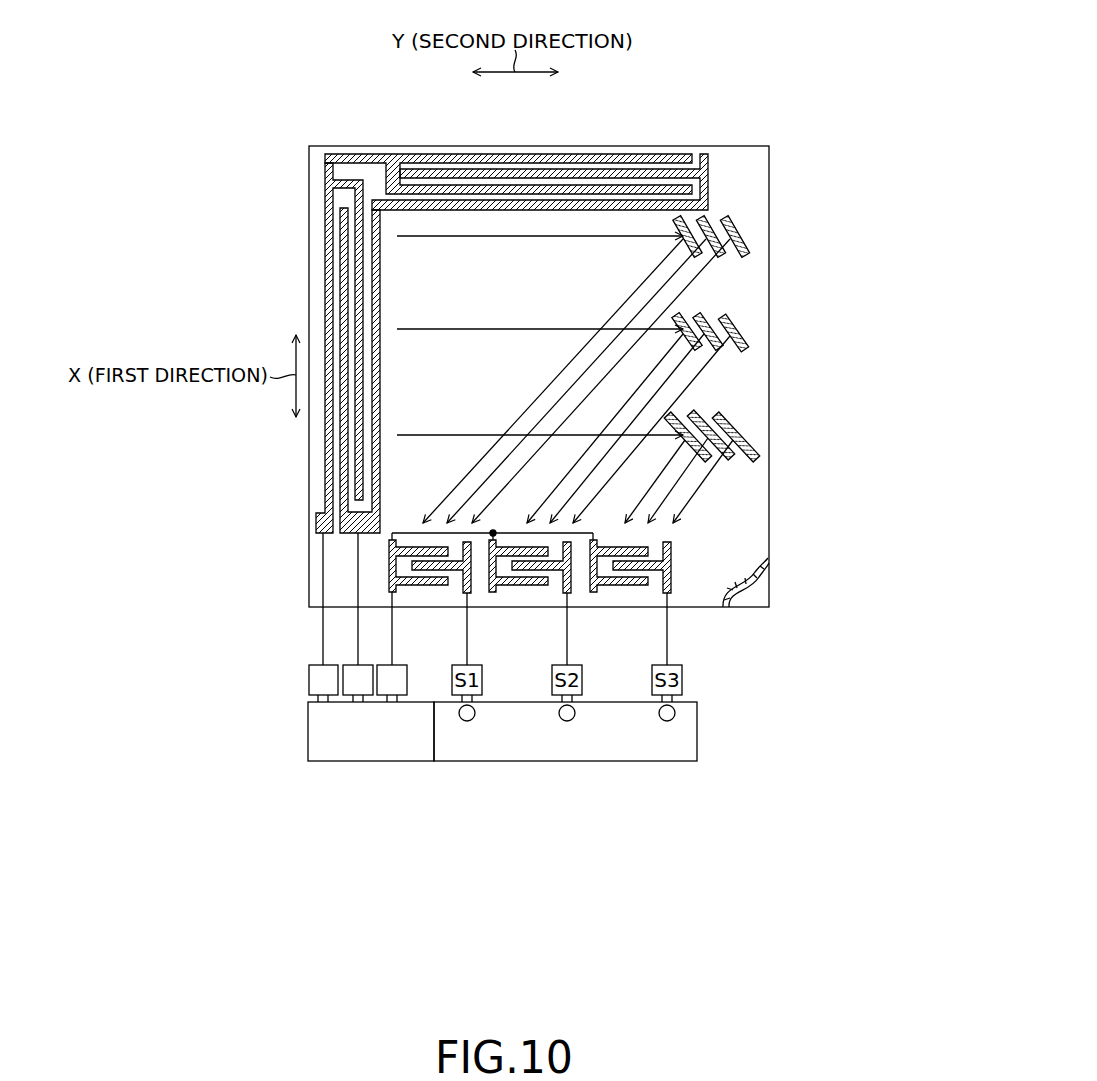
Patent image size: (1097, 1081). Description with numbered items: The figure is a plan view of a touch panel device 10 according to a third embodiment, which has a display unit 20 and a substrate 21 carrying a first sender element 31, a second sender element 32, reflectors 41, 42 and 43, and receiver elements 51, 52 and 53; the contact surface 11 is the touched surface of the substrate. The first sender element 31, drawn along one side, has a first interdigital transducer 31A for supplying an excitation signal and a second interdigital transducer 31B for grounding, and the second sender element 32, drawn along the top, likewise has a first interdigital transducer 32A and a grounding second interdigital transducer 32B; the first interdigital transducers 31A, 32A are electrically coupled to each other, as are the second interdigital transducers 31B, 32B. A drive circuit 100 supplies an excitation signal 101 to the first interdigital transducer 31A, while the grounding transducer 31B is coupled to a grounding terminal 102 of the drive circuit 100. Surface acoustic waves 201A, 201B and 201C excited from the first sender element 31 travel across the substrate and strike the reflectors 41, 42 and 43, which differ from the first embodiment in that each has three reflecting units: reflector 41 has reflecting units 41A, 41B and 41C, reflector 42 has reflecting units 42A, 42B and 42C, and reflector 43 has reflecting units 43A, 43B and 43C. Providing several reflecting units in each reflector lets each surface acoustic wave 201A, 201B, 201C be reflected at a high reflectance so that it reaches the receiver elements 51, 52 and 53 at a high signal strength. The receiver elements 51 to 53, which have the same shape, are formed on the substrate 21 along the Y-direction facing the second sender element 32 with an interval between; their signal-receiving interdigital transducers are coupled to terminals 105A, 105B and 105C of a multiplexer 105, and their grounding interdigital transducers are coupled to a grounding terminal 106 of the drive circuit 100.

The touch panel device 10 is at (728, 40).
The contact surface 11 is at (522, 363).
The display unit 20 is at (755, 596).
The substrate 21 is at (750, 534).
The first sender element 31 is at (255, 348).
The first interdigital transducer 31A is at (381, 415).
The second interdigital transducer 31B is at (325, 448).
The second sender element 32 is at (586, 176).
The first interdigital transducer 32A is at (545, 211).
The second interdigital transducer 32B is at (418, 152).
The reflector 41 is at (810, 263).
The reflecting unit 41A is at (700, 258).
The reflecting unit 41B is at (724, 258).
The reflecting unit 41C is at (748, 258).
The reflector 42 is at (809, 357).
The reflecting unit 42A is at (700, 350).
The reflecting unit 42B is at (722, 350).
The reflecting unit 42C is at (748, 351).
The reflector 43 is at (805, 464).
The reflecting unit 43A is at (707, 464).
The reflecting unit 43B is at (732, 460).
The reflecting unit 43C is at (758, 462).
The receiver element 51 is at (421, 594).
The receiver element 52 is at (503, 594).
The receiver element 53 is at (613, 595).
The drive circuit 100 is at (372, 763).
The excitation signal 101 is at (358, 638).
The grounding terminal 102 is at (309, 680).
The multiplexer 105 is at (565, 754).
The terminal 105A is at (467, 721).
The terminal 105B is at (567, 721).
The terminal 105C is at (668, 731).
The grounding terminal 106 is at (407, 680).
The surface acoustic wave 201A is at (435, 237).
The surface acoustic wave 201B is at (432, 329).
The surface acoustic wave 201C is at (435, 436).